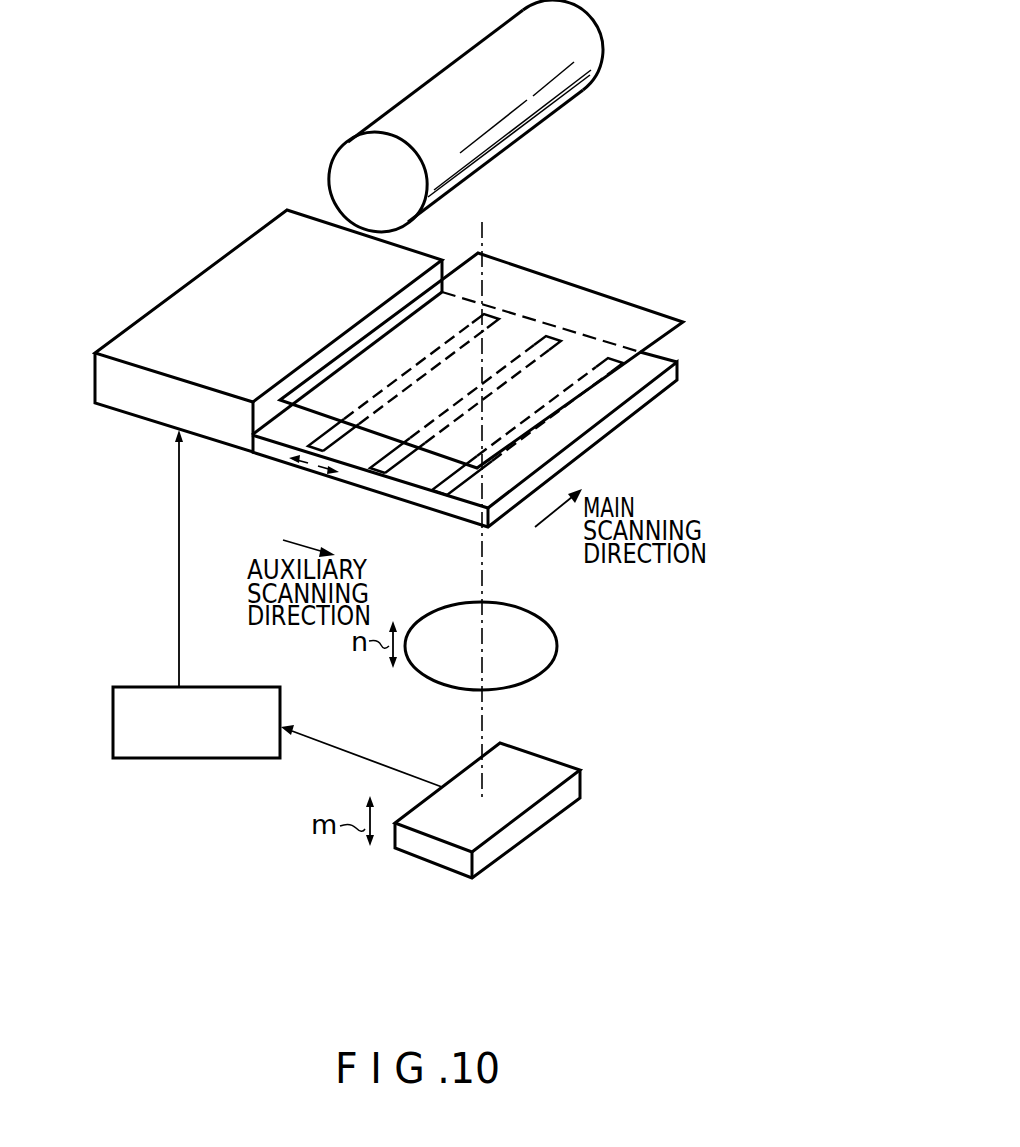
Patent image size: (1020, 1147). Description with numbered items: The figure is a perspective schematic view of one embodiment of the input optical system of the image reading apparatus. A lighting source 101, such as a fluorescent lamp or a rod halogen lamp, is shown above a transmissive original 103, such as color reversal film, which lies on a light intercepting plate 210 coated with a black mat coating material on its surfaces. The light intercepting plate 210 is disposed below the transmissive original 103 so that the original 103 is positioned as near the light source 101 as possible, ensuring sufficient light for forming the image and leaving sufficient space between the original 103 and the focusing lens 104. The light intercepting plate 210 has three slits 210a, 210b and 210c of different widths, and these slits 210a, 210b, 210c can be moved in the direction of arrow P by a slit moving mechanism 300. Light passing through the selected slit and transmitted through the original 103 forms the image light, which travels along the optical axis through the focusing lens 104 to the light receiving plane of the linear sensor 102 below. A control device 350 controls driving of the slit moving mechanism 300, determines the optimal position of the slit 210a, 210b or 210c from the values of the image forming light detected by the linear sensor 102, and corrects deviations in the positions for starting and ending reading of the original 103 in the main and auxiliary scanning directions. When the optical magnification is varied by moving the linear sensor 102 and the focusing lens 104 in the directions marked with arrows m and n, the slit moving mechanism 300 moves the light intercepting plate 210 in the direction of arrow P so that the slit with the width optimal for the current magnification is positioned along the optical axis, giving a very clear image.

The lighting source 101 is at (553, 118).
The linear sensor 102 is at (543, 826).
The transmissive original 103 is at (592, 288).
The focusing lens 104 is at (547, 626).
The light intercepting plate 210 is at (635, 418).
The slit 210a is at (318, 440).
The slit 210b is at (377, 469).
The slit 210c is at (452, 487).
The slit moving mechanism 300 is at (190, 265).
The control device 350 is at (256, 687).
The direction of arrow p P is at (316, 460).